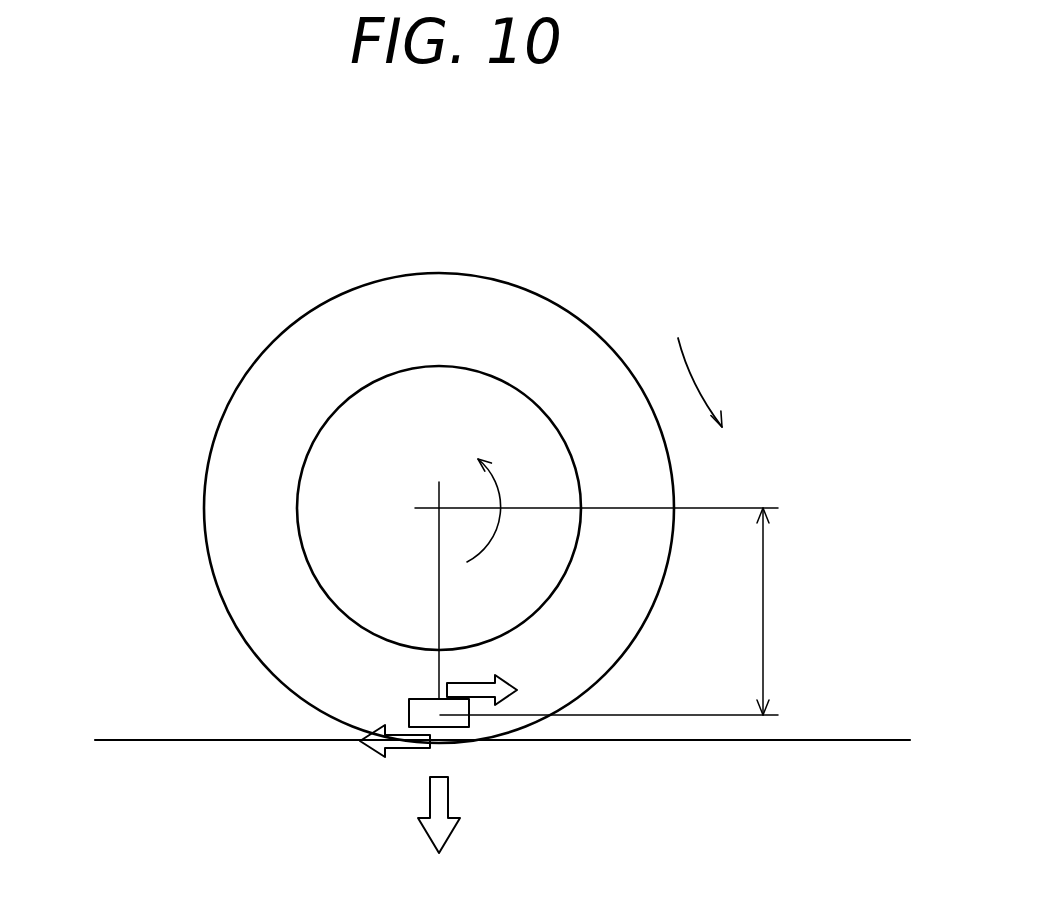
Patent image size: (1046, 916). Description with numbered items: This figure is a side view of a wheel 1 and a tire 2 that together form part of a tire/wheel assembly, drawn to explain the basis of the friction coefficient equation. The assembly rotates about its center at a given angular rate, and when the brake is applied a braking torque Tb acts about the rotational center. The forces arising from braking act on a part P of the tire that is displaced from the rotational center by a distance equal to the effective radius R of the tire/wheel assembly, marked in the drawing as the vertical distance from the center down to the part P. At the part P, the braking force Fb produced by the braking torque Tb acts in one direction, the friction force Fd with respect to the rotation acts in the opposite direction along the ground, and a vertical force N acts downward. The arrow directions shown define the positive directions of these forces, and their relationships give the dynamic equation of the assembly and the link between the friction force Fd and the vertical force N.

The wheel 1 is at (384, 423).
The tire 2 is at (260, 431).
The part P is at (469, 710).
The effective radius R is at (779, 611).
The braking torque Tb is at (509, 510).
The braking force Fb is at (498, 671).
The friction force Fd is at (379, 756).
The vertical force N is at (439, 838).